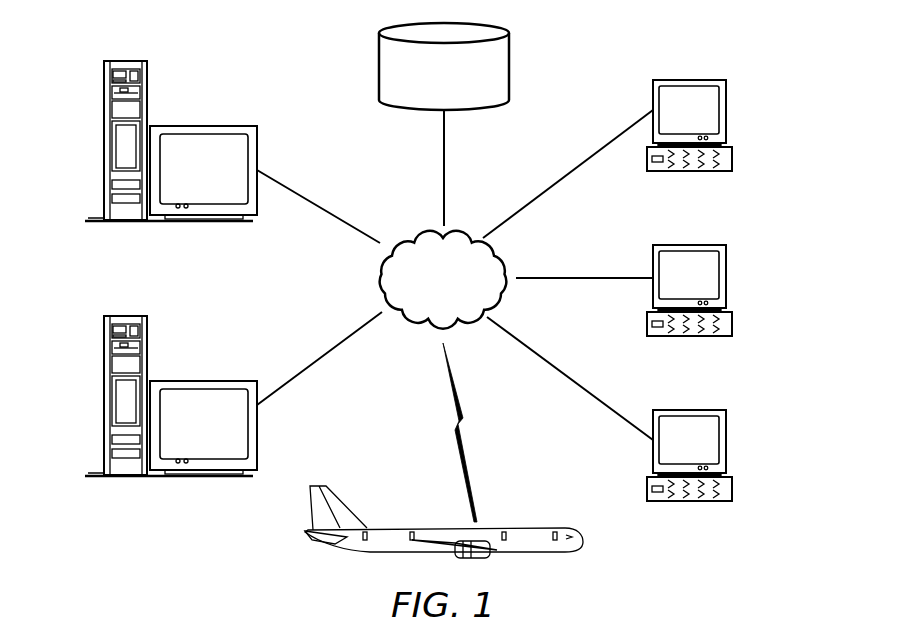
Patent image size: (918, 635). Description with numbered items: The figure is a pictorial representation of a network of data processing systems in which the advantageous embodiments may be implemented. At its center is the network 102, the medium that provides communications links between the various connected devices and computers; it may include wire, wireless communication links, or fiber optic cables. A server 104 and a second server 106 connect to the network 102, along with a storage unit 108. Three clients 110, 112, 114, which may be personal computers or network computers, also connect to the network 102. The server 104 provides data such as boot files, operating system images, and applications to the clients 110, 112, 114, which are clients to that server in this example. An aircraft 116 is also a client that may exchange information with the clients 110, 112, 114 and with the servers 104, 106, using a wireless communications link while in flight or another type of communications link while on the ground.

The network 102 is at (413, 227).
The server 104 is at (104, 142).
The server 106 is at (104, 397).
The storage unit 108 is at (378, 66).
The client 110 is at (726, 111).
The client 112 is at (726, 278).
The client 114 is at (726, 440).
The aircraft 116 is at (572, 556).